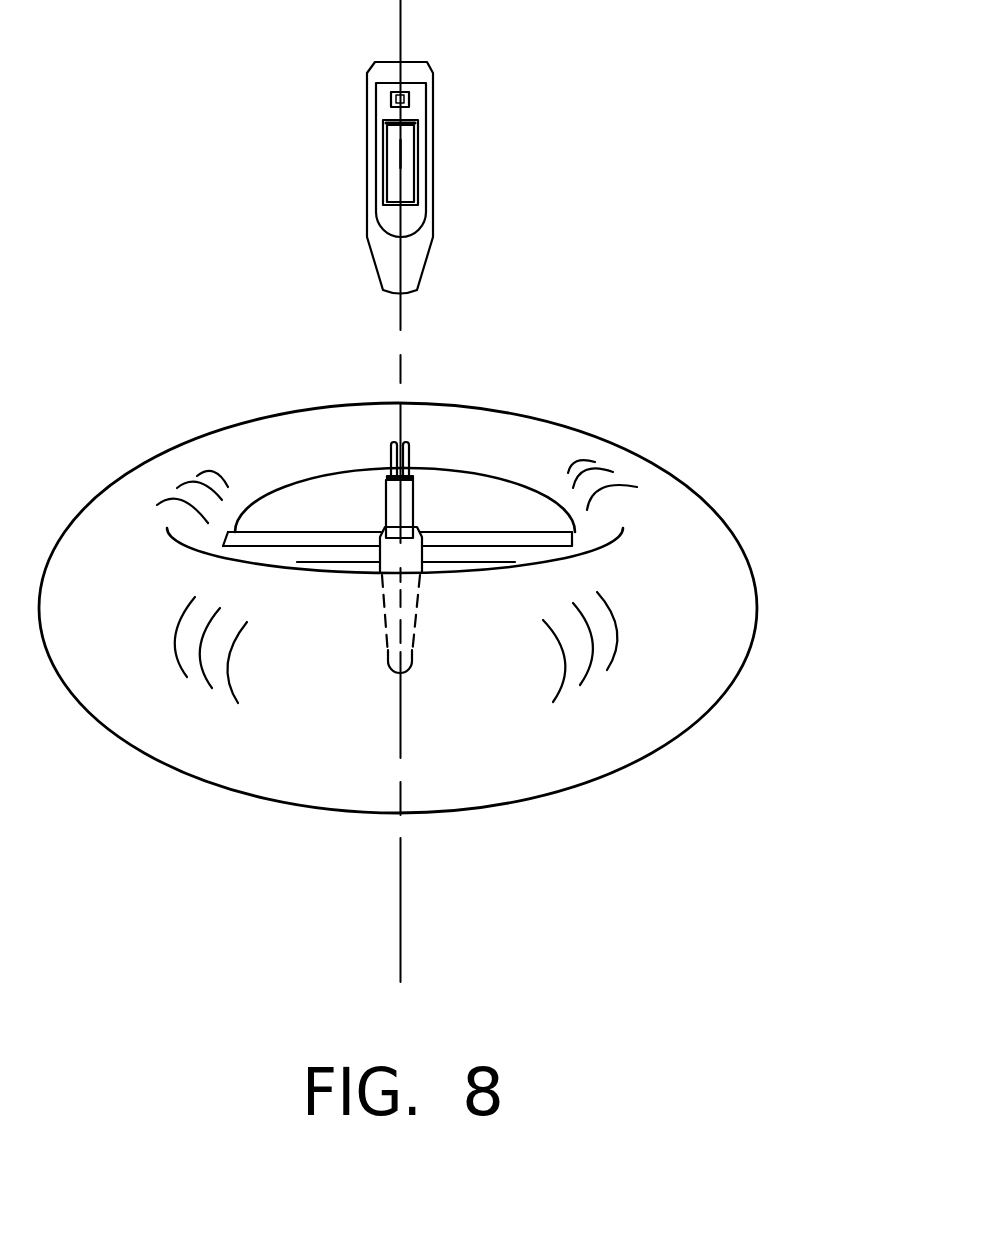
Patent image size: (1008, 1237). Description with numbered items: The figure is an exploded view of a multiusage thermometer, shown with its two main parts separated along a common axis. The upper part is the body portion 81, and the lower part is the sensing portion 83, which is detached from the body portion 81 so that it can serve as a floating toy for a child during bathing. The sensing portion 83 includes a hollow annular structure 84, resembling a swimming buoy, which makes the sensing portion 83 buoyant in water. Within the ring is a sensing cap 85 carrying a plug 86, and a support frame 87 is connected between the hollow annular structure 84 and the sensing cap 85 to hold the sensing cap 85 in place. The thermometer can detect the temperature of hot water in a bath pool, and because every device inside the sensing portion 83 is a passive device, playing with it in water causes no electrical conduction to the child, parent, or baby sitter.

The body portion 81 is at (433, 193).
The sensing portion 83 is at (727, 522).
The hollow annular structure 84 is at (723, 633).
The sensing cap 85 is at (420, 653).
The plug 86 is at (410, 452).
The support frame 87 is at (470, 538).